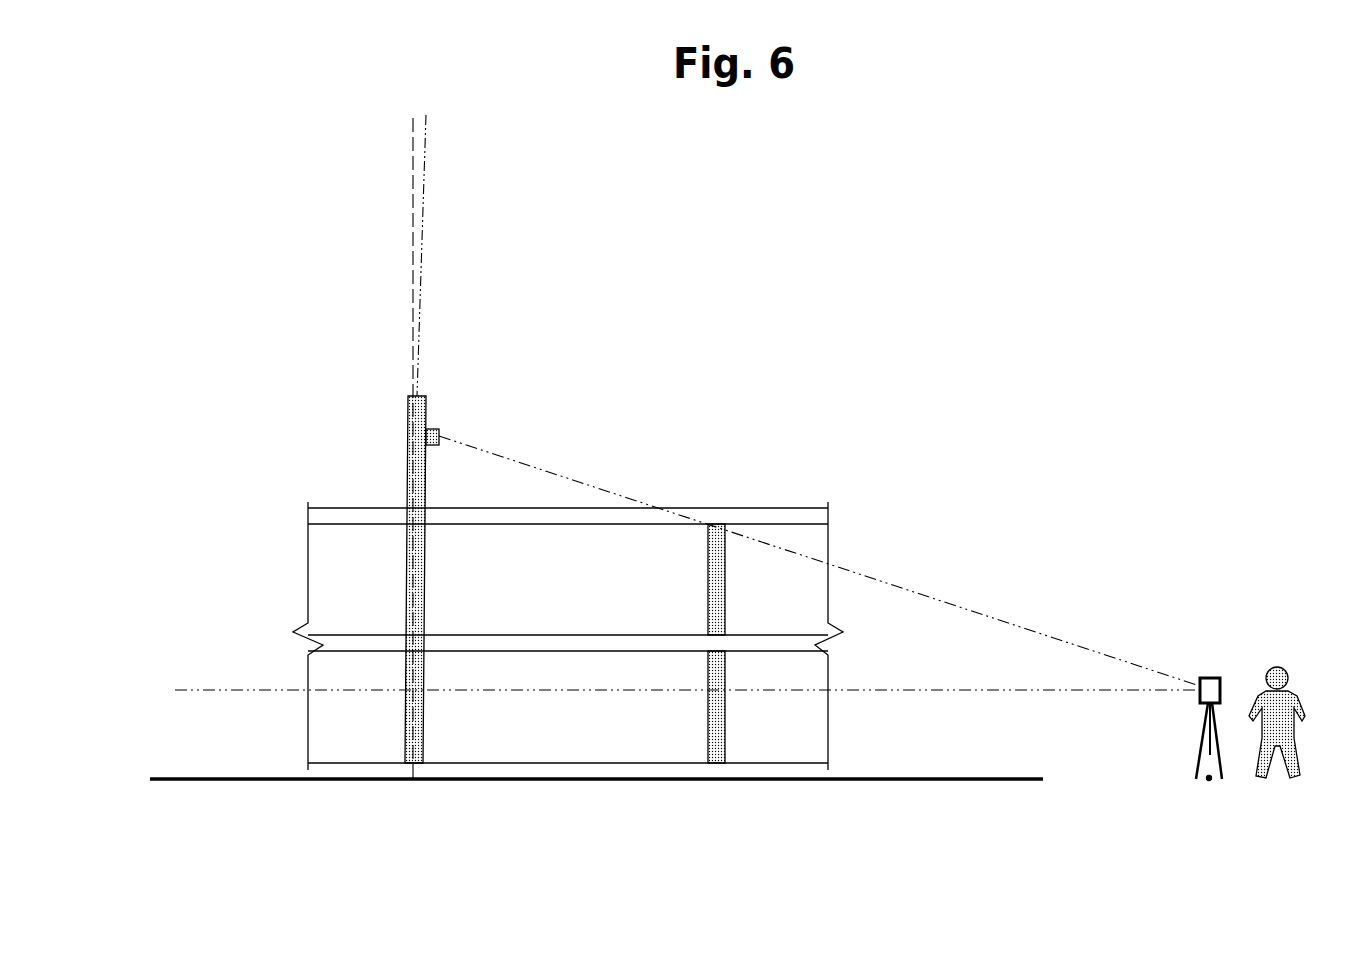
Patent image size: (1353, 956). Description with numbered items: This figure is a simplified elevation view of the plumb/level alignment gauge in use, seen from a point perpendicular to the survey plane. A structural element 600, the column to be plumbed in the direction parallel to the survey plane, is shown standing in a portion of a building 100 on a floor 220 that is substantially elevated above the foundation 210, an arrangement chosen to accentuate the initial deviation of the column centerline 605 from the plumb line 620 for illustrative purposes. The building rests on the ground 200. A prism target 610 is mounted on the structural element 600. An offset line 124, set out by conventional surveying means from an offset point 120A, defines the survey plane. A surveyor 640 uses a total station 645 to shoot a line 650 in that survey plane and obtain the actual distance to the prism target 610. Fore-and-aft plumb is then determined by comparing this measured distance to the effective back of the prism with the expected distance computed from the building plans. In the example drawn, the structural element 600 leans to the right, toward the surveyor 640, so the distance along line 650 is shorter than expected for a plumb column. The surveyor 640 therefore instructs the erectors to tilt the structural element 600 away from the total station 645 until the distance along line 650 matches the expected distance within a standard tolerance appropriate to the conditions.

The building 100 is at (602, 578).
The floor 220 is at (634, 485).
The foundation 210 is at (512, 739).
The ground 200 is at (596, 800).
The structural element 600 is at (359, 572).
The prism target 610 is at (498, 402).
The plumb line 620 is at (364, 448).
The column centerline 605 is at (467, 255).
The line 650 is at (819, 561).
The offset line 124 is at (687, 715).
The total station 645 is at (1156, 637).
The surveyor 640 is at (1257, 687).
The offset point 120A is at (1267, 804).